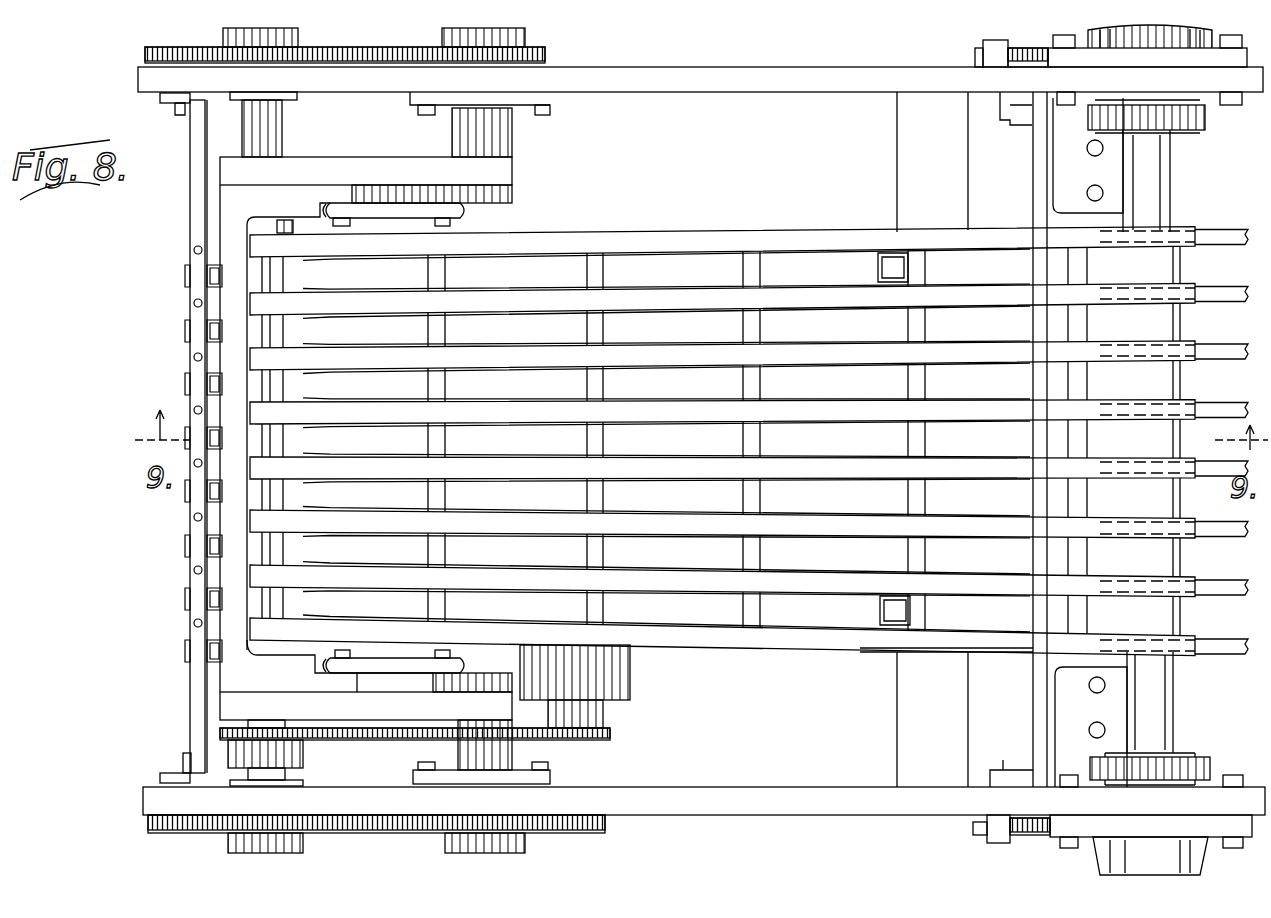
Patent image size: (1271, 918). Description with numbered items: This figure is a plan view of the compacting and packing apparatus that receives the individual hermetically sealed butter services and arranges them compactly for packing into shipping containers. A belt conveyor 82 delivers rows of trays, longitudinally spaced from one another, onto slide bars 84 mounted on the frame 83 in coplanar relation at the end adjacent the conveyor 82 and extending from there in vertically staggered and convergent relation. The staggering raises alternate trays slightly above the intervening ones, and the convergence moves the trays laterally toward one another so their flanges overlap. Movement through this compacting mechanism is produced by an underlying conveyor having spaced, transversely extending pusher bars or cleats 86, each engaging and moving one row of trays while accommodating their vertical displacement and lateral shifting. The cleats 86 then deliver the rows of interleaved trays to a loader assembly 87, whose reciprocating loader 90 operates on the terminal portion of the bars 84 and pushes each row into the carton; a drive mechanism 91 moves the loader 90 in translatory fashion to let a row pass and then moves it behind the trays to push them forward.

The belt conveyor 82 is at (1205, 295).
The frame 83 is at (861, 195).
The slide bars 84 is at (828, 300).
The pusher bars or cleats 86 is at (600, 492).
The loader assembly 87 is at (549, 210).
The reciprocating loader 90 is at (167, 317).
The drive mechanism 91 is at (605, 738).